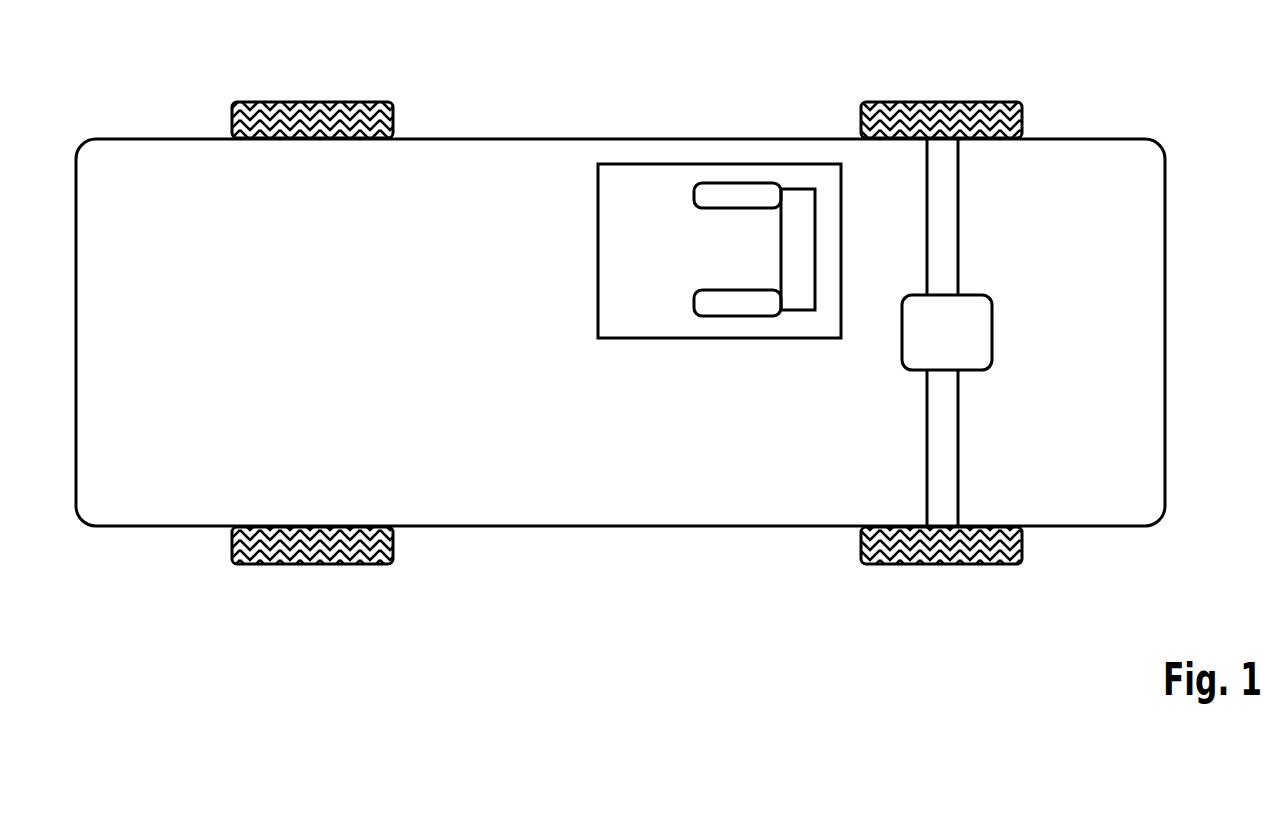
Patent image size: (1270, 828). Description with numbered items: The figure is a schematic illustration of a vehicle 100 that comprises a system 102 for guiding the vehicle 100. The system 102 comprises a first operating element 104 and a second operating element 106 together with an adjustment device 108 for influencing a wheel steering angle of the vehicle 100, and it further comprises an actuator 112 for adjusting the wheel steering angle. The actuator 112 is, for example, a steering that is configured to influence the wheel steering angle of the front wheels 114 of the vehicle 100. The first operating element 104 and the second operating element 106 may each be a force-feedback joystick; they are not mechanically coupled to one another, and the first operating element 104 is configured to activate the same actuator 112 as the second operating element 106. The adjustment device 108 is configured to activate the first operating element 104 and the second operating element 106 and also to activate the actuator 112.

The vehicle 100 is at (1165, 330).
The system 102 is at (598, 248).
The first operating element 104 is at (694, 194).
The second operating element 106 is at (694, 300).
The adjustment device 108 is at (816, 247).
The actuator 112 is at (992, 333).
The front wheels 114 is at (940, 102).